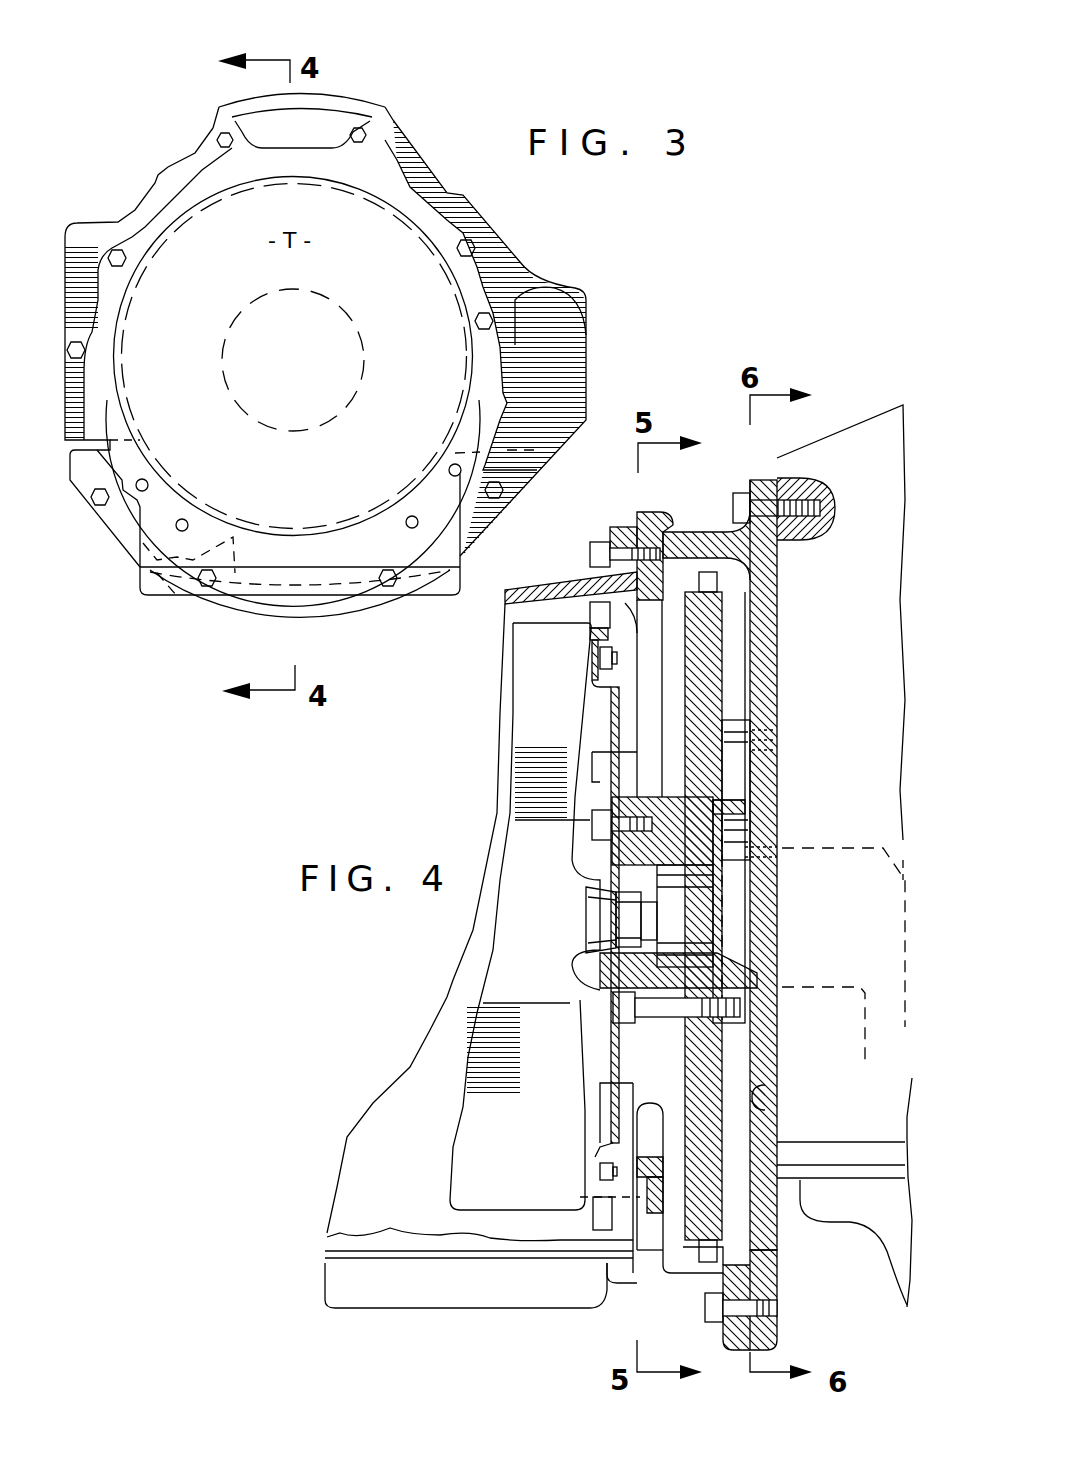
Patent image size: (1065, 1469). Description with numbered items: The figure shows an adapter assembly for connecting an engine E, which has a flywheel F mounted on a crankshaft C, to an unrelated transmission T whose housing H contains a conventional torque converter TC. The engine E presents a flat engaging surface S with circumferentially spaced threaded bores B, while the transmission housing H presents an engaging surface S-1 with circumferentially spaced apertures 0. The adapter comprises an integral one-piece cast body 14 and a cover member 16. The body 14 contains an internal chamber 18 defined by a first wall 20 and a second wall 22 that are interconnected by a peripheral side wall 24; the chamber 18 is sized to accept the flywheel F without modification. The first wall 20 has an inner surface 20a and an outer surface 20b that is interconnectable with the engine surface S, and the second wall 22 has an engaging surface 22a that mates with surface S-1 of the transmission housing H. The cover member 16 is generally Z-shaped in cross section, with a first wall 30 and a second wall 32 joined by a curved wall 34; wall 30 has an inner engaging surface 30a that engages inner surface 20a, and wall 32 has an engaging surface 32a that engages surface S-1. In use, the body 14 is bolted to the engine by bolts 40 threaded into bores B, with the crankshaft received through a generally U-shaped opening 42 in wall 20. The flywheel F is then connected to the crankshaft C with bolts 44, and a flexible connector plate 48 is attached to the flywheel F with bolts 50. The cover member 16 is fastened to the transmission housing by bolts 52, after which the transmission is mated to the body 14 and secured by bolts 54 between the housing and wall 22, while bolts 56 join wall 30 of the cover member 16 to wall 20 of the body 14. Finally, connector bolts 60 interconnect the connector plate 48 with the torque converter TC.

In FIG. 3, the integral one-piece cast body 14 is at (502, 213).
In FIG. 4, the integral one-piece cast body 14 is at (750, 476).
In FIG. 3, the cover member 16 is at (102, 552).
In FIG. 4, the cover member 16 is at (658, 1290).
In FIG. 4, the internal chamber 18 is at (735, 745).
In FIG. 4, the first wall 20 is at (784, 628).
In FIG. 4, the inner surface 20a is at (754, 1248).
In FIG. 4, the outer surface 20b is at (790, 540).
In FIG. 4, the second wall 22 is at (653, 600).
In FIG. 4, the engaging surface 22a is at (628, 604).
In FIG. 4, the peripheral side wall 24 is at (693, 545).
In FIG. 3, the first wall of cover member 30 is at (303, 618).
In FIG. 4, the first wall of cover member 30 is at (722, 1338).
In FIG. 4, the inner engaging surface 30a is at (759, 1283).
In FIG. 4, the second wall of cover member 32 is at (633, 1207).
In FIG. 4, the engaging surface 32a is at (633, 1170).
In FIG. 4, the curved wall 34 is at (665, 1268).
In FIG. 3, the bolts 40 is at (221, 135).
In FIG. 4, the bolts 40 is at (826, 508).
In FIG. 4, the U-shaped opening 42 is at (762, 1090).
In FIG. 4, the bolts 44 is at (650, 1005).
In FIG. 4, the flexible connector plate 48 is at (611, 722).
In FIG. 4, the bolts 50 is at (600, 838).
In FIG. 4, the bolts 52 is at (565, 1197).
In FIG. 3, the bolts 54 is at (120, 262).
In FIG. 4, the bolts 54 is at (590, 556).
In FIG. 3, the bolts 56 is at (97, 503).
In FIG. 4, the bolts 56 is at (779, 1308).
In FIG. 4, the connector bolts 60 is at (600, 660).
In FIG. 3, the engine E is at (345, 102).
In FIG. 4, the engine E is at (870, 442).
In FIG. 4, the transmission T is at (398, 1058).
In FIG. 4, the torque converter TC is at (515, 945).
In FIG. 4, the flywheel F is at (715, 655).
In FIG. 4, the crankshaft C is at (705, 905).
In FIG. 4, the flat engaging surface S is at (780, 688).
In FIG. 4, the threaded bores B is at (804, 496).
In FIG. 4, the transmission housing H is at (515, 604).
In FIG. 4, the apertures 0 is at (622, 540).
In FIG. 4, the engaging surface S-1 is at (645, 535).